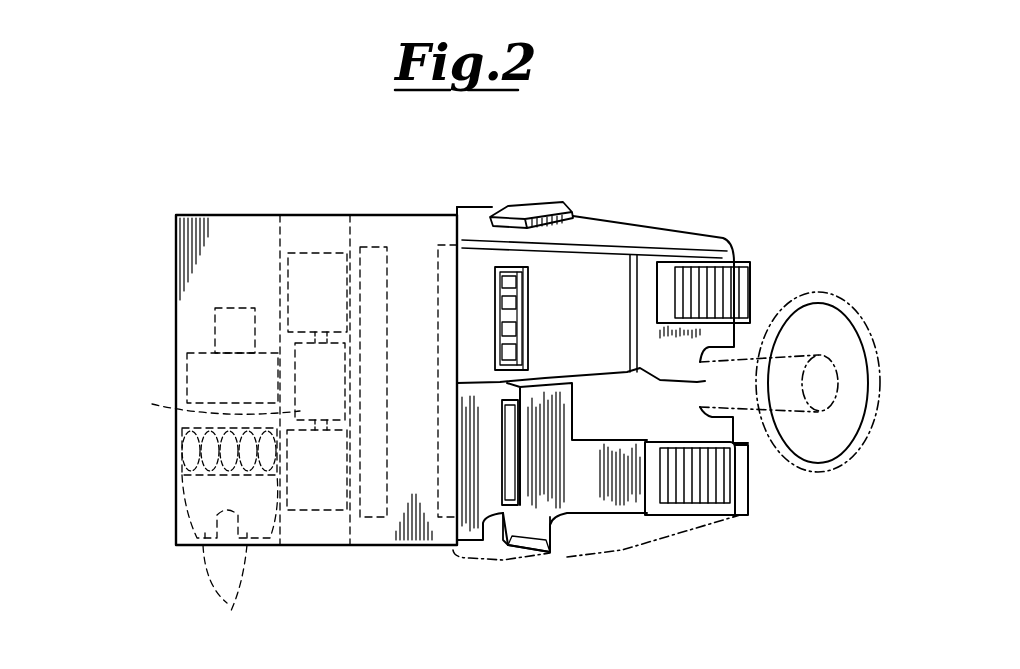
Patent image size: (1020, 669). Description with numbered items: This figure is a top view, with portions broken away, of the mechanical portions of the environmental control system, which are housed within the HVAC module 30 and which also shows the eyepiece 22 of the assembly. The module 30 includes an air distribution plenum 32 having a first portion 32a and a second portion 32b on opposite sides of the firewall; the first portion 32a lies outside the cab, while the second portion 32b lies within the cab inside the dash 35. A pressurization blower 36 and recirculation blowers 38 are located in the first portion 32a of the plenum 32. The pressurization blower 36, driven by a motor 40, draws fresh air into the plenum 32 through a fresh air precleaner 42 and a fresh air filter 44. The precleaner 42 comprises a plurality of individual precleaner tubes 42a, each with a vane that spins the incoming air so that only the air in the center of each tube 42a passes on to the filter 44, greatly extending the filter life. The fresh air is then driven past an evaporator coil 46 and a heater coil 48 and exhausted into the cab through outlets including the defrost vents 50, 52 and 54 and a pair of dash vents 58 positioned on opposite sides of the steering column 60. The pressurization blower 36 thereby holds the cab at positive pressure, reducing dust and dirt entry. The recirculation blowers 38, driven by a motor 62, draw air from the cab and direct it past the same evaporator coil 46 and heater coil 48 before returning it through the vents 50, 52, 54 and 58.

The eyepiece 22 is at (850, 302).
The HVAC module 30 is at (163, 558).
The air distribution plenum 32 is at (168, 277).
The first portion 32a is at (259, 215).
The second portion 32b is at (673, 515).
The dash 35 is at (673, 240).
The pressurization blower 36 is at (187, 375).
The recirculation blowers 38 is at (328, 253).
The motor 40 is at (215, 325).
The fresh air precleaner 42 is at (176, 522).
The precleaner tubes 42a is at (228, 605).
The fresh air filter 44 is at (182, 450).
The evaporator coil 46 is at (380, 243).
The heater coil 48 is at (448, 245).
The defrost vent 50 is at (512, 297).
The defrost vent 52 is at (530, 552).
The defrost vent 54 is at (515, 203).
The dash vents 58 is at (727, 275).
The steering column 60 is at (747, 358).
The motor 62 is at (212, 404).